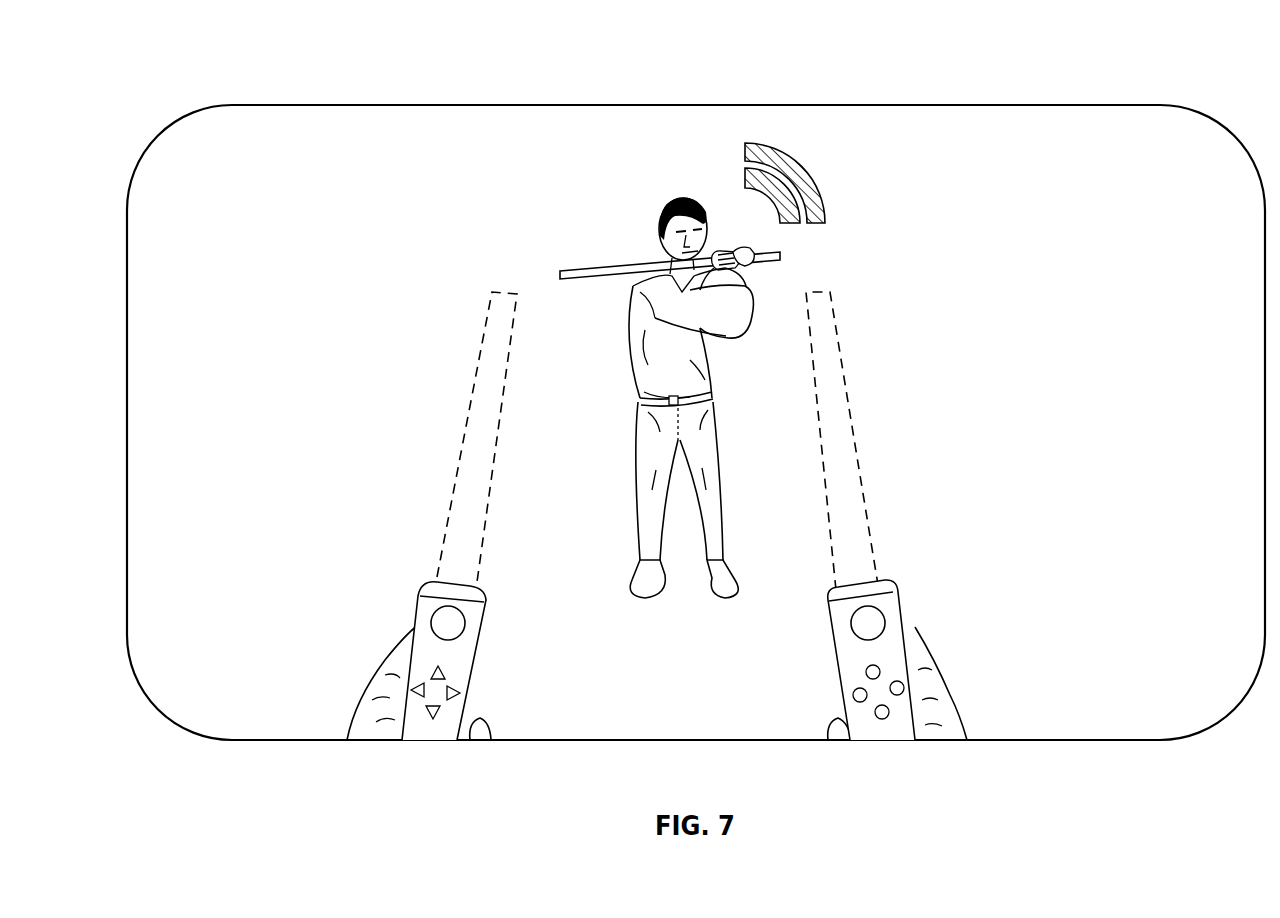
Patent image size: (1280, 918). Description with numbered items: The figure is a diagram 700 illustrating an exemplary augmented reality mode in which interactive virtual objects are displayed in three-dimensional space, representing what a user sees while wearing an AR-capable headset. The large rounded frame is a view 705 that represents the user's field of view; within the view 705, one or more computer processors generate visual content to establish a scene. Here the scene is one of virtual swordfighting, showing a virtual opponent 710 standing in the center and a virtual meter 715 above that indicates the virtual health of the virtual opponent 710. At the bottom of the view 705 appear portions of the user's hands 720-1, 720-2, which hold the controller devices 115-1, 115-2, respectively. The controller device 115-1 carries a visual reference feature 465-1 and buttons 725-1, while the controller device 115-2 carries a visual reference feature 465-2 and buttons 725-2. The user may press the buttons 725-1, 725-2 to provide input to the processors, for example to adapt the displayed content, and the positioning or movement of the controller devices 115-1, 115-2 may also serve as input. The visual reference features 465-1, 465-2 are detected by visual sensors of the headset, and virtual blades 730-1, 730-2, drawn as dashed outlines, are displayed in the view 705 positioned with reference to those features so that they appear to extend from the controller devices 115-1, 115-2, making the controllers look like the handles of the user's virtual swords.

The diagram 700 is at (130, 64).
The view 705 is at (1157, 105).
The virtual opponent 710 is at (637, 442).
The virtual meter 715 is at (796, 162).
The virtual blade 730-1 is at (470, 382).
The virtual blade 730-2 is at (846, 368).
The hand 720-1 is at (378, 680).
The hand 720-2 is at (938, 677).
The controller device 115-1 is at (417, 626).
The controller device 115-2 is at (903, 628).
The visual reference feature 465-1 is at (432, 617).
The visual reference feature 465-2 is at (884, 618).
The buttons 725-1 is at (455, 663).
The buttons 725-2 is at (858, 664).